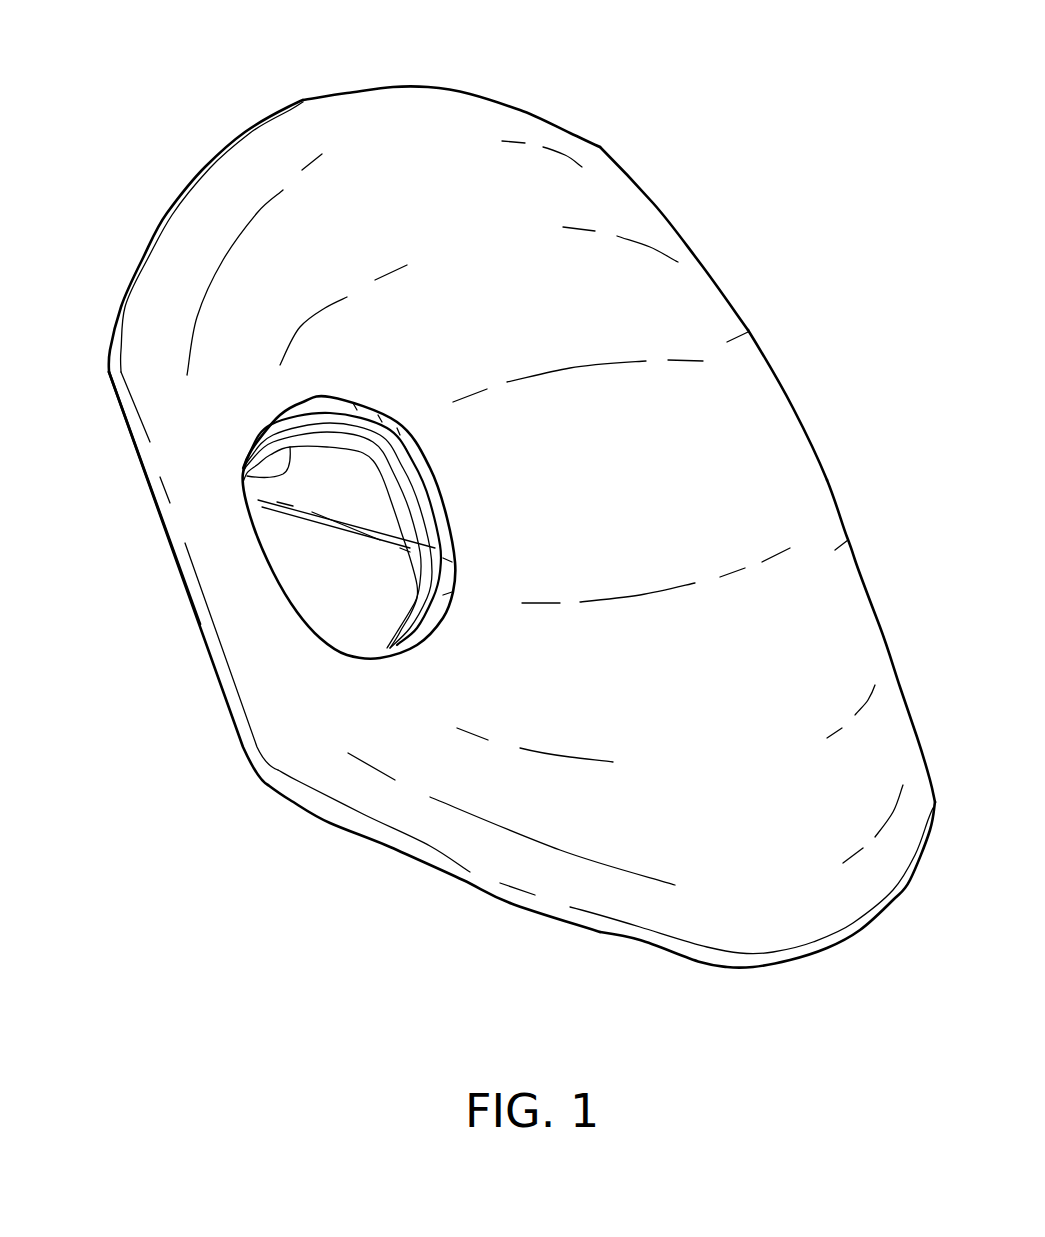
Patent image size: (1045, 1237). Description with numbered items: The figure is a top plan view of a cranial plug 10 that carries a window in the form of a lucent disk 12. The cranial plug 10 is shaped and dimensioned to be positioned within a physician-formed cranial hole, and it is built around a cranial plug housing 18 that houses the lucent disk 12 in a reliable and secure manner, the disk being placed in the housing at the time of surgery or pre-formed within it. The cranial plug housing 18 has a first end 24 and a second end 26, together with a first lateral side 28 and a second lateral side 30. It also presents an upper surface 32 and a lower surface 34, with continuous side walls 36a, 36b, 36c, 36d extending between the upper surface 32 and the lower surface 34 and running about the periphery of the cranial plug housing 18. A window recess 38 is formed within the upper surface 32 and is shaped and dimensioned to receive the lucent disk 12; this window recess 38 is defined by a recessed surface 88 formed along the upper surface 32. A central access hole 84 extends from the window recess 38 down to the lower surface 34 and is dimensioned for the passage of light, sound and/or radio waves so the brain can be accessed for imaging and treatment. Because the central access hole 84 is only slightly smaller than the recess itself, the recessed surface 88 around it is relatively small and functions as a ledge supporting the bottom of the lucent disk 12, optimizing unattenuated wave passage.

The cranial plug 10 is at (656, 125).
The lucent disk 12 is at (307, 598).
The cranial plug housing 18 is at (750, 332).
The first end 24 is at (403, 86).
The second end 26 is at (715, 957).
The first lateral side 28 is at (230, 708).
The second lateral side 30 is at (827, 480).
The upper surface 32 is at (845, 540).
The lower surface 34 is at (510, 902).
The side wall 36a is at (302, 100).
The side wall 36b is at (153, 498).
The side wall 36c is at (817, 953).
The side wall 36d is at (792, 408).
The window recess 38 is at (262, 547).
The central access hole 84 is at (240, 471).
The recessed surface 88 is at (298, 438).